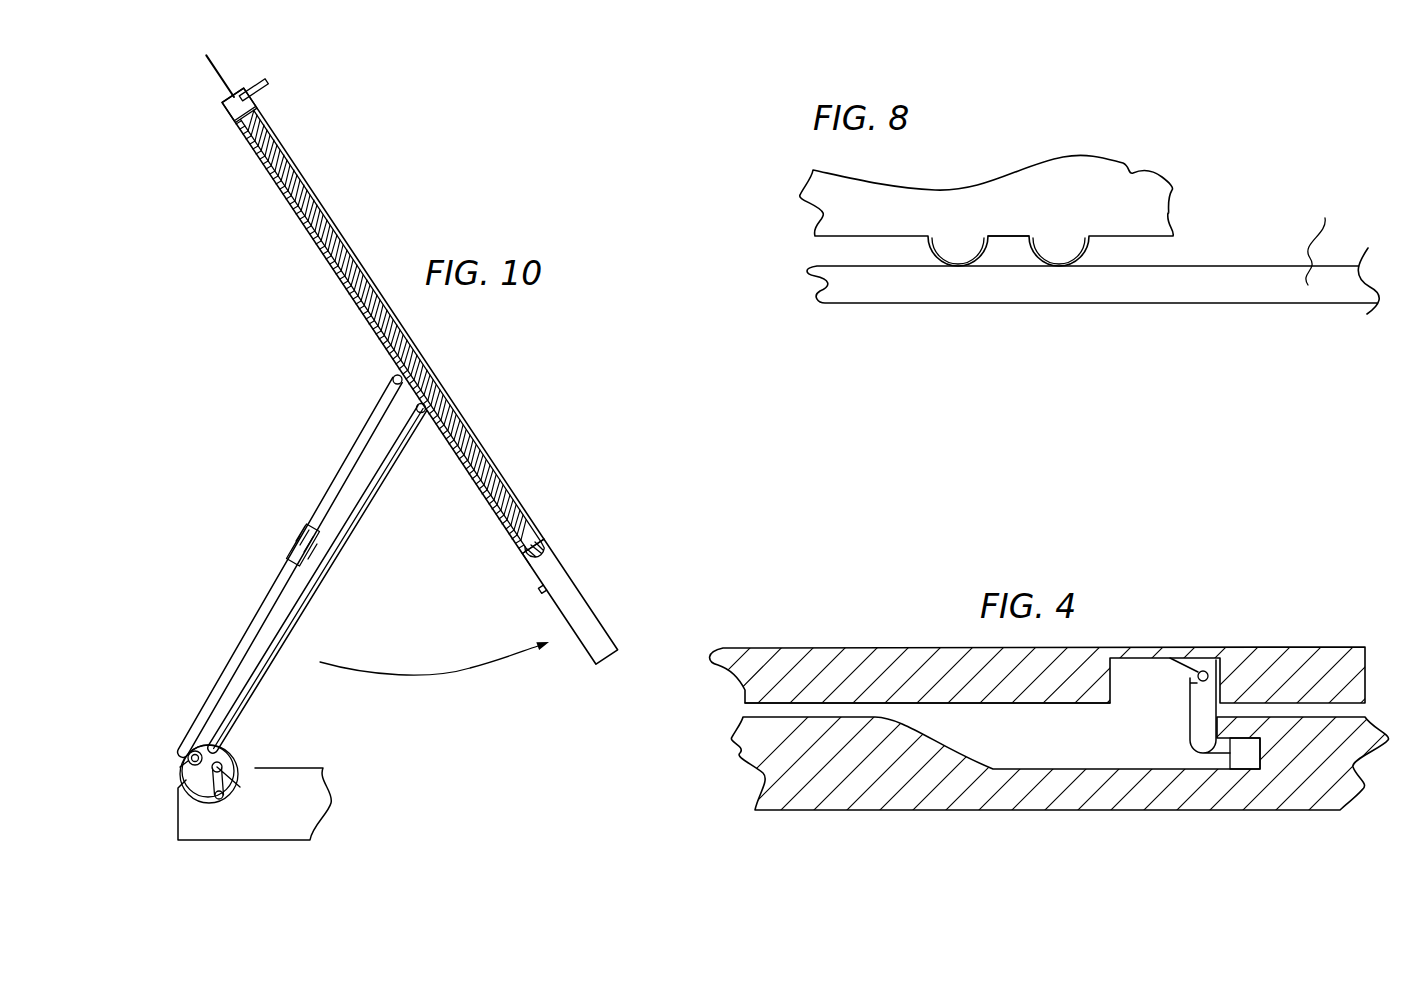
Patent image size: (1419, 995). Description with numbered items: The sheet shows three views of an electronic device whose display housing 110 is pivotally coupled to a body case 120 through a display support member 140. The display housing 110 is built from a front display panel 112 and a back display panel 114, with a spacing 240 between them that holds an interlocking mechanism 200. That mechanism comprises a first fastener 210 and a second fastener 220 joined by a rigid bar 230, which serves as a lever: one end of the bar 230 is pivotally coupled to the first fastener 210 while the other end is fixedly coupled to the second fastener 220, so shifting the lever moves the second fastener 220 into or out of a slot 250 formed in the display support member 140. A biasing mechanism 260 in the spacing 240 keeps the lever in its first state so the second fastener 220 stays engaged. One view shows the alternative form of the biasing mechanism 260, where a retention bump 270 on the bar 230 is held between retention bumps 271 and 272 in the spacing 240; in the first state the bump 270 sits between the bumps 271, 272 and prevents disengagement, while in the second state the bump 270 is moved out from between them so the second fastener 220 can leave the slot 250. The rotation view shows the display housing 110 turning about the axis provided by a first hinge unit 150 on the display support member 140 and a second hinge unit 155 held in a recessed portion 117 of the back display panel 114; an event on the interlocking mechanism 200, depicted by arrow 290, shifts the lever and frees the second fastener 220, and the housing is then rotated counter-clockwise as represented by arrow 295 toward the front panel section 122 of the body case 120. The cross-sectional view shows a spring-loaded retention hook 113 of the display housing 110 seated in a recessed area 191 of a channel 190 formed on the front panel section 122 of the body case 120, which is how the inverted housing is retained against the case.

In FIG. 10, the display housing 110 is at (510, 461).
In FIG. 4, the display housing 110 is at (1285, 663).
In FIG. 4, the front display panel 112 is at (775, 703).
In FIG. 10, the spring-loaded retention hook 113 is at (545, 588).
In FIG. 4, the spring-loaded retention hook 113 is at (1198, 713).
In FIG. 10, the back display panel 114 is at (262, 217).
In FIG. 10, the recessed portion 117 is at (513, 543).
In FIG. 10, the body case 120 is at (268, 790).
In FIG. 4, the body case 120 is at (1332, 770).
In FIG. 10, the front panel section 122 is at (307, 771).
In FIG. 10, the display support member 140 is at (230, 619).
In FIG. 10, the first hinge unit 150 is at (393, 380).
In FIG. 10, the second hinge unit 155 is at (422, 412).
In FIG. 4, the channel 190 is at (1036, 740).
In FIG. 4, the recessed area 191 is at (1243, 753).
In FIG. 10, the interlocking mechanism 200 is at (335, 304).
In FIG. 10, the first fastener 210 is at (268, 86).
In FIG. 10, the second fastener 220 is at (514, 548).
In FIG. 10, the bar 230 is at (280, 169).
In FIG. 8, the bar 230 is at (1326, 240).
In FIG. 8, the spacing 240 is at (1196, 256).
In FIG. 10, the slot 250 is at (297, 553).
In FIG. 10, the biasing mechanism 260 is at (547, 540).
In FIG. 8, the biasing mechanism 260 is at (1143, 148).
In FIG. 8, the retention bump 270 is at (1010, 247).
In FIG. 8, the retention bump 271 is at (955, 245).
In FIG. 8, the retention bump 272 is at (1067, 245).
In FIG. 10, the arrow 290 is at (222, 84).
In FIG. 10, the arrow 295 is at (435, 677).